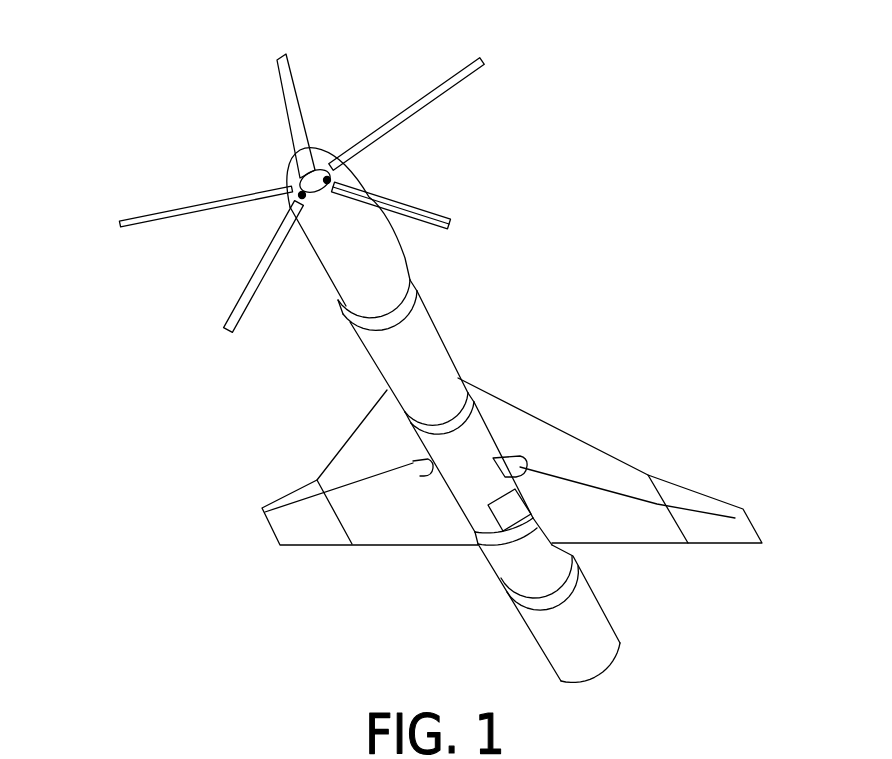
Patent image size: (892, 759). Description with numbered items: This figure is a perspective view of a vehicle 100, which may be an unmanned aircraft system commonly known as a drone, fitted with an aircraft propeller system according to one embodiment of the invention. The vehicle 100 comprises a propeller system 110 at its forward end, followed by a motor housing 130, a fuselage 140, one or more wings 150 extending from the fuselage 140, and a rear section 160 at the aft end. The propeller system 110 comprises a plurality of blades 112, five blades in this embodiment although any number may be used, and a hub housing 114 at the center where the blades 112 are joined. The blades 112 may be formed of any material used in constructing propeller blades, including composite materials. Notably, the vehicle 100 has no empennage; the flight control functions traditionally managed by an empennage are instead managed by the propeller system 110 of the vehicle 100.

The vehicle 100 is at (741, 162).
The propeller system 110 is at (230, 142).
The plurality of blades 112 is at (232, 196).
The hub housing 114 is at (308, 150).
The motor housing 130 is at (342, 243).
The fuselage 140 is at (412, 347).
The wings 150 is at (583, 505).
The rear section 160 is at (565, 627).